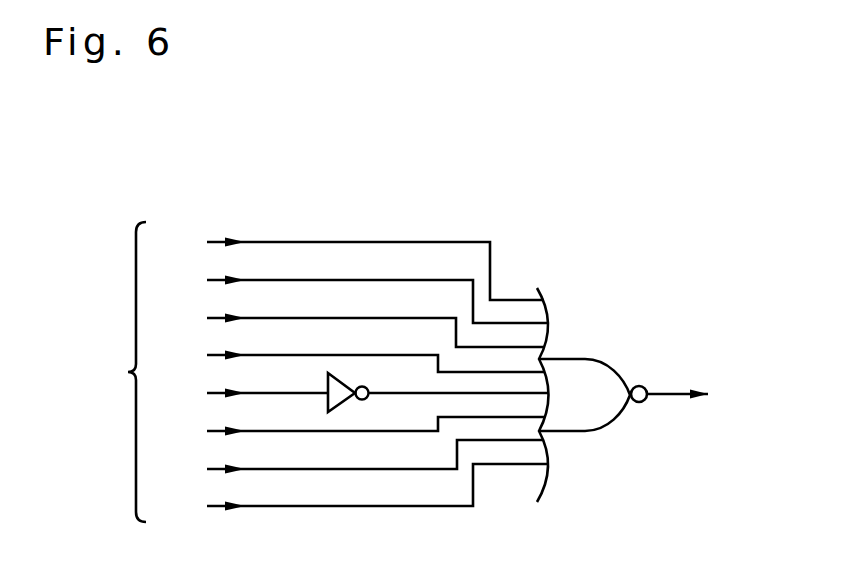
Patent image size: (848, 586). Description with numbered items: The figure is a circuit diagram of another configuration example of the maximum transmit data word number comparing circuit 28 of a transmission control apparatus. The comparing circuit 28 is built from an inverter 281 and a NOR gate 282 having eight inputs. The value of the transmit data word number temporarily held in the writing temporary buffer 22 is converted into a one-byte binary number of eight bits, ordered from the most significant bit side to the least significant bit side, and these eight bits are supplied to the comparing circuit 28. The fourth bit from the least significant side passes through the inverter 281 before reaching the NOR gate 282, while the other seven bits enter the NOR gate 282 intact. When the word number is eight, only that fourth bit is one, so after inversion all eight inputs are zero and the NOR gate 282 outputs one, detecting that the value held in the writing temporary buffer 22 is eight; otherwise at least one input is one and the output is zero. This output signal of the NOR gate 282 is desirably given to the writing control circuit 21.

The writing temporary buffer 22 is at (198, 377).
The maximum transmit data word number comparing circuit 28 is at (565, 248).
The inverter 281 is at (349, 384).
The NOR gate 282 is at (638, 347).
The writing control circuit 21 is at (702, 394).